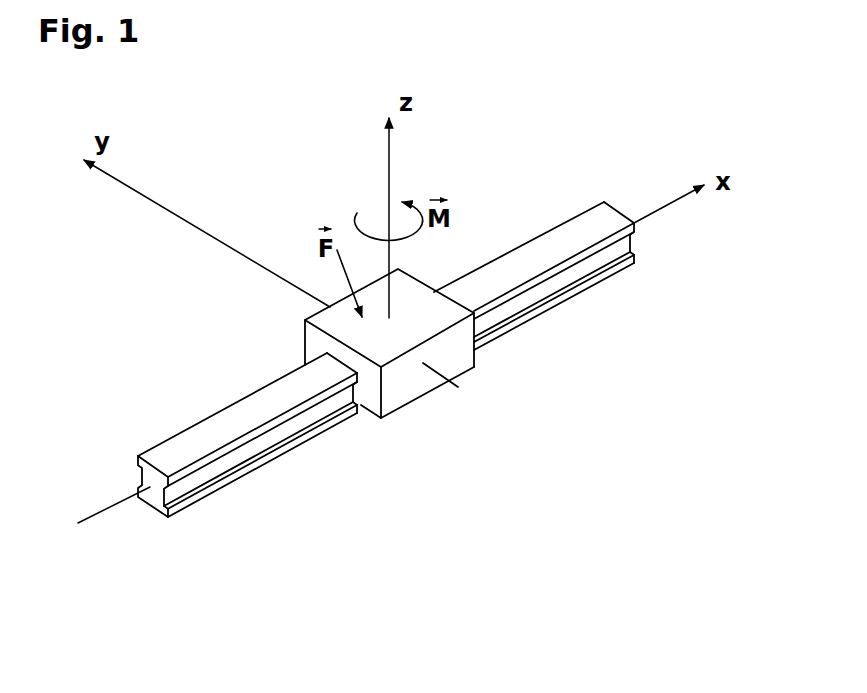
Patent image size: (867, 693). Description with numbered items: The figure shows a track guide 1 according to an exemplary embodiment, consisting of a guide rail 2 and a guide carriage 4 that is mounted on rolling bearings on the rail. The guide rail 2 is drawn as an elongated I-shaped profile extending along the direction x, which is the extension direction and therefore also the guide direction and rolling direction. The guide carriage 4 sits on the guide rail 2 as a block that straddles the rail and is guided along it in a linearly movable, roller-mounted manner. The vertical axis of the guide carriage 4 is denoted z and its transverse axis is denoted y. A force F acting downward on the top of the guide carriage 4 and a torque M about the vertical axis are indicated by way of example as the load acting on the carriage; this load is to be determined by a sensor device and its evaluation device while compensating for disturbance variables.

The track guide 1 is at (697, 128).
The guide rail 2 is at (556, 240).
The guide carriage 4 is at (408, 389).